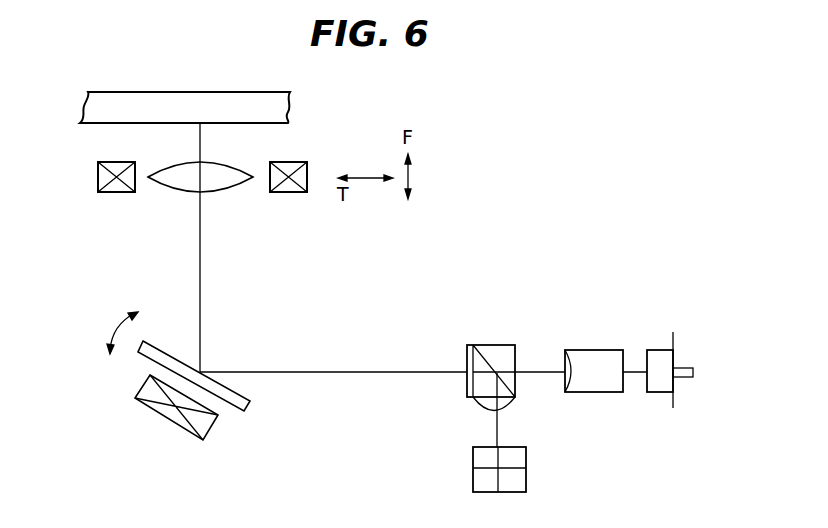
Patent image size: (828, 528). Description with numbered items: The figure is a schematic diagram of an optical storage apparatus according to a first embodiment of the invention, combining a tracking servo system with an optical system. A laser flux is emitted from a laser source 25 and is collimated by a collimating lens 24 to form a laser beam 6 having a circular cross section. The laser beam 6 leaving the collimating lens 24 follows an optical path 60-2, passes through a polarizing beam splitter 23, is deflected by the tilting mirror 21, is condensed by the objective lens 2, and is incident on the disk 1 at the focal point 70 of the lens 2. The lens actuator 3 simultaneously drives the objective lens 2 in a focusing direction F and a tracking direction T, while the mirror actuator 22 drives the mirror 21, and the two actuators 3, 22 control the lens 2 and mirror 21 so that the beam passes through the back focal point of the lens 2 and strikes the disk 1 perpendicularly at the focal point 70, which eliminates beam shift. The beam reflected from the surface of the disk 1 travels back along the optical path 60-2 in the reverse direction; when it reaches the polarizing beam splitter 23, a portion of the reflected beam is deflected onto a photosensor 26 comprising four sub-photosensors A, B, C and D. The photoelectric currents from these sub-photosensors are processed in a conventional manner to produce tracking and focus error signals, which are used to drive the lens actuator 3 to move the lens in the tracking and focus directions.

The focal point 70 is at (185, 107).
The disk 1 is at (290, 101).
The objective lens 2 is at (240, 185).
The lens actuator 3 is at (297, 192).
The tilting mirror 21 is at (247, 407).
The mirror actuator 22 is at (146, 401).
The optical path 60-2 is at (352, 372).
The polarizing beam splitter 23 is at (483, 349).
The laser beam 6 is at (551, 367).
The collimating lens 24 is at (580, 393).
The laser source 25 is at (675, 351).
The photosensor 26 is at (526, 468).